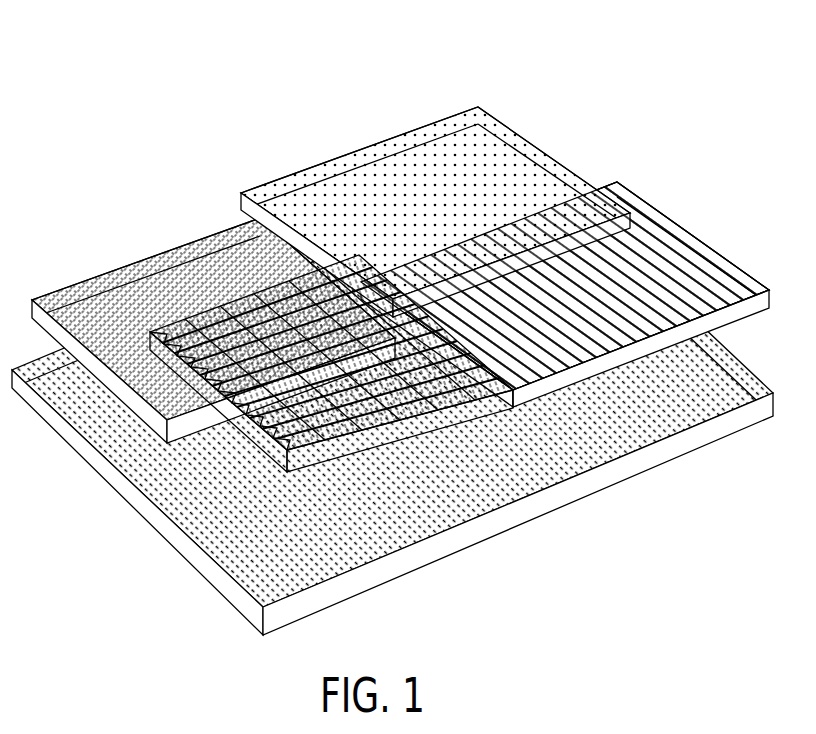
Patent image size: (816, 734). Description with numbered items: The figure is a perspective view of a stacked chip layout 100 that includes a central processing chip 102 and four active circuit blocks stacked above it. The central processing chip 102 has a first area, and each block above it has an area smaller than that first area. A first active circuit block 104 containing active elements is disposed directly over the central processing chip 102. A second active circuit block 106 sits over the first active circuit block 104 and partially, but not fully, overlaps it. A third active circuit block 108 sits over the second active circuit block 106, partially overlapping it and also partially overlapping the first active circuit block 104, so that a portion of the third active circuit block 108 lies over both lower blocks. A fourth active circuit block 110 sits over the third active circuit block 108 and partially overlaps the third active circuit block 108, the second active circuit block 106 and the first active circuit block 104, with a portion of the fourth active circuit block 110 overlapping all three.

The stacked chip layout 100 is at (392, 331).
The central processing chip 102 is at (505, 475).
The first active circuit block 104 is at (195, 298).
The second active circuit block 106 is at (445, 208).
The third active circuit block 108 is at (577, 313).
The fourth active circuit block 110 is at (411, 367).